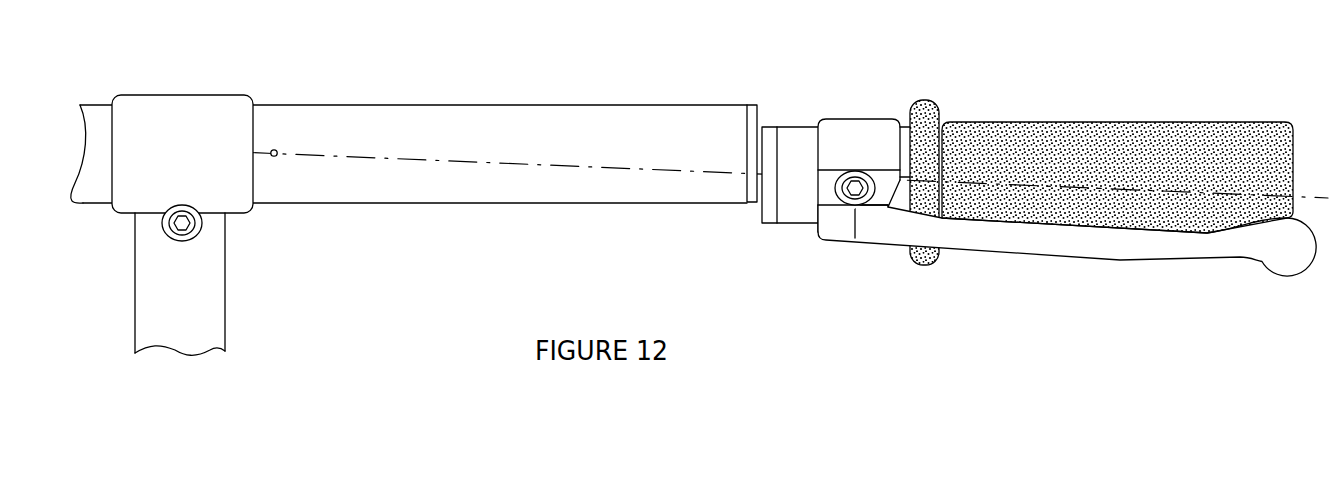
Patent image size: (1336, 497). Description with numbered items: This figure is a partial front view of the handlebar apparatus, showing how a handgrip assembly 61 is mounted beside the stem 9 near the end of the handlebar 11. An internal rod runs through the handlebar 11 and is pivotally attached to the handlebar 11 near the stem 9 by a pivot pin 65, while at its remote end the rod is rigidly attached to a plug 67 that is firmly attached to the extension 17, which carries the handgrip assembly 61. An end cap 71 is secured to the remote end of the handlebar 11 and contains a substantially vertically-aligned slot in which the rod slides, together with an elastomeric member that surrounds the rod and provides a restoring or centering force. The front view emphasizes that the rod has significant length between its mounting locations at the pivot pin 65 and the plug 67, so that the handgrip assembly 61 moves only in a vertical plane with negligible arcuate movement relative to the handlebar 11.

The stem 9 is at (178, 100).
The handlebar 11 is at (93, 106).
The extension 17 is at (790, 225).
The handgrip assembly 61 is at (873, 107).
The pivot pin 65 is at (276, 148).
The plug 67 is at (770, 130).
The end cap 71 is at (752, 104).